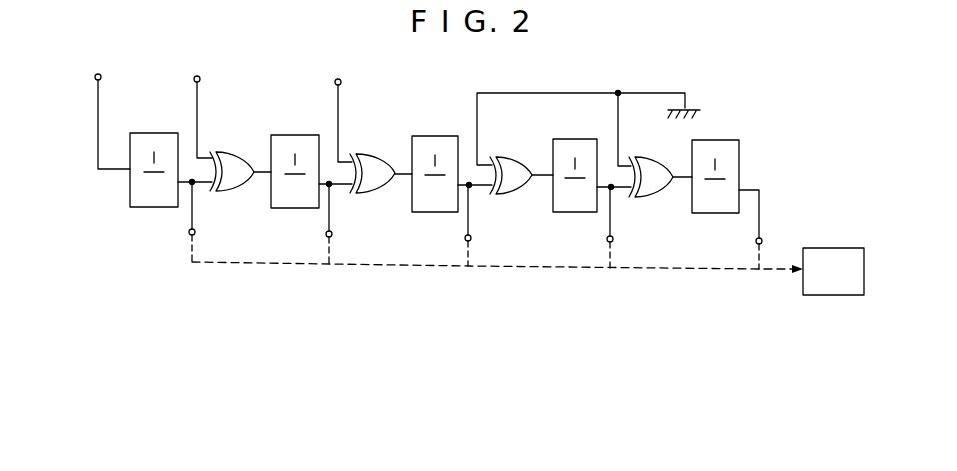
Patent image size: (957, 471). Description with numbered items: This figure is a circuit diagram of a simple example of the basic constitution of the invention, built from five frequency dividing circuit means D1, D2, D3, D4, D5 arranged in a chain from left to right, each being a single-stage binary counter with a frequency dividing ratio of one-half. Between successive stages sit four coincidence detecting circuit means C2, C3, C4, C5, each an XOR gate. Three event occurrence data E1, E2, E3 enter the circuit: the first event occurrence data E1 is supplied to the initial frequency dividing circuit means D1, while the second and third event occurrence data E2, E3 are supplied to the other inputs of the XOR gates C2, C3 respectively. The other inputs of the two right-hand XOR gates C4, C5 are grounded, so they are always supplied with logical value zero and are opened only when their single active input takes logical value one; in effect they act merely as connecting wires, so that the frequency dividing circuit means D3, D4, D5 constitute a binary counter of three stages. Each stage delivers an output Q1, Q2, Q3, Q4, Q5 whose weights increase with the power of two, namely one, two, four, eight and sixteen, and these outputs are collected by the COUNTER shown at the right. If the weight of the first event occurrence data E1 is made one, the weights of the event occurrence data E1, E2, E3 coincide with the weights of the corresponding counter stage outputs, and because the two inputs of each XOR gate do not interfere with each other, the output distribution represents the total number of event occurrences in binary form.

The first event occurrence data E1 is at (101, 75).
The second event occurrence data E2 is at (200, 77).
The third event occurrence data E3 is at (341, 80).
The first frequency dividing circuit means D1 is at (153, 207).
The second frequency dividing circuit means D2 is at (288, 208).
The third frequency dividing circuit means D3 is at (432, 212).
The fourth frequency dividing circuit means D4 is at (570, 212).
The fifth frequency dividing circuit means D5 is at (713, 213).
The coincidence detecting circuit means C2 is at (232, 151).
The coincidence detecting circuit means C3 is at (370, 153).
The coincidence detecting circuit means C4 is at (510, 156).
The coincidence detecting circuit means C5 is at (643, 156).
The output Q1 is at (189, 236).
The output Q2 is at (326, 238).
The output Q3 is at (465, 242).
The output Q4 is at (607, 243).
The output Q5 is at (756, 245).
The counter COUNTER is at (836, 247).